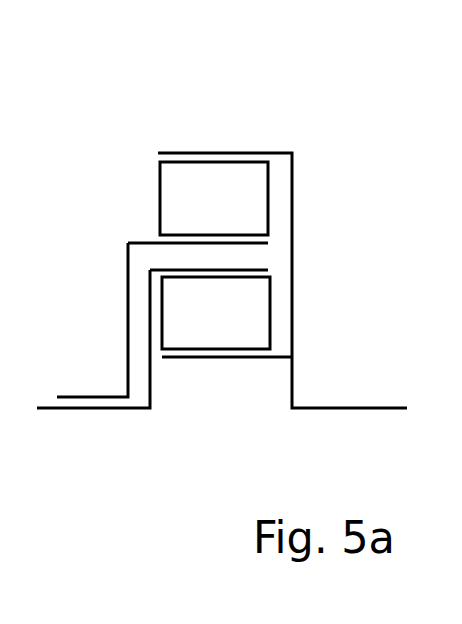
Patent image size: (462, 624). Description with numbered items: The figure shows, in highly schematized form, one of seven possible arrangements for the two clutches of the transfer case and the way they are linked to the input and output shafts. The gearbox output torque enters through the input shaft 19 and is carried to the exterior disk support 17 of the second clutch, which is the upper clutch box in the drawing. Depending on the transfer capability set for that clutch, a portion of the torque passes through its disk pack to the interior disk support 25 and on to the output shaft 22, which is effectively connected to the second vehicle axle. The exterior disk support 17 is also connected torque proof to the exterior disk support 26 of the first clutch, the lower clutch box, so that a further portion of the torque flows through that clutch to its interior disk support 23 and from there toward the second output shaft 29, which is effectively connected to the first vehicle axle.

The exterior disk support 17 is at (250, 152).
The input shaft 19 is at (310, 408).
The output shaft 22 is at (107, 395).
The interior disk support 23 is at (183, 358).
The interior disk support 25 is at (142, 242).
The exterior disk support 26 is at (252, 269).
The second output shaft 29 is at (98, 410).